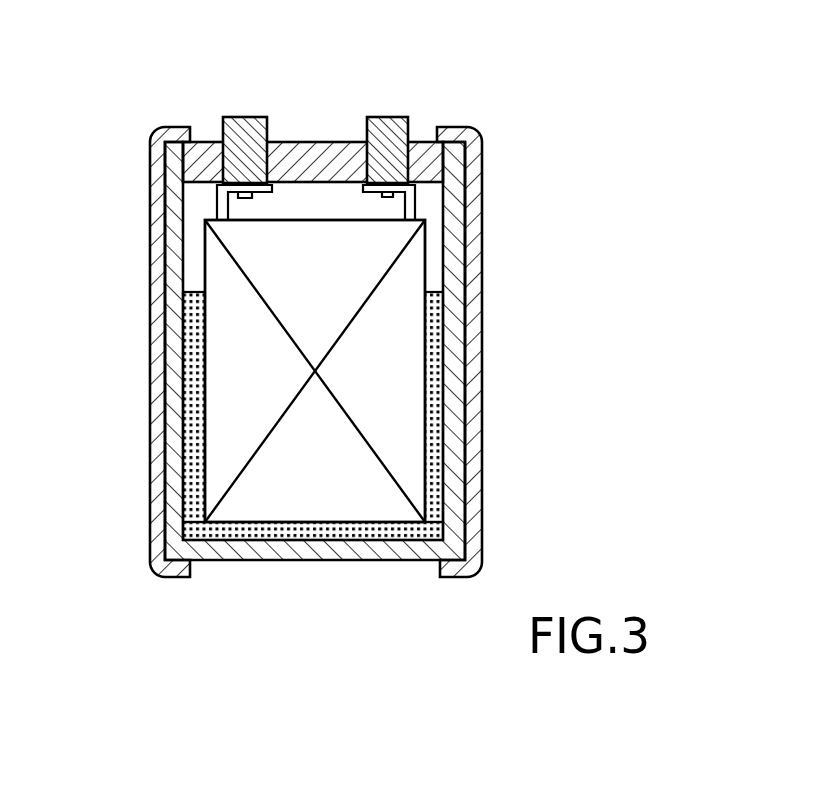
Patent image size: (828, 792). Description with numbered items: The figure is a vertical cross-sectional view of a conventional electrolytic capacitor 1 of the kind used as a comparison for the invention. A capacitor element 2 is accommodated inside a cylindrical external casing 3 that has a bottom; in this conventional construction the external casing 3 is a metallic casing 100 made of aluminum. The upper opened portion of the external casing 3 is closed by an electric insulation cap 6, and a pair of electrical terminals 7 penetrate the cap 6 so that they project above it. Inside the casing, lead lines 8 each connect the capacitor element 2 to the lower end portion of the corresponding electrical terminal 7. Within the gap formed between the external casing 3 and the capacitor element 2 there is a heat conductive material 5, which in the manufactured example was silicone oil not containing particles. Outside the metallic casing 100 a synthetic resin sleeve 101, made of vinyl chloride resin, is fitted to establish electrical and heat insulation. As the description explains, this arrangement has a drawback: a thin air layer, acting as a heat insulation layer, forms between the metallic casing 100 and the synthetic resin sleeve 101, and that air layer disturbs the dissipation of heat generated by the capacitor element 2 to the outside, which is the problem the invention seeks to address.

The electrolytic capacitor 1 is at (357, 339).
The capacitor element 2 is at (347, 478).
The external casing 3 is at (452, 502).
The heat conductive material 5 is at (443, 368).
The electric insulation cap 6 is at (330, 158).
The electrical terminal 7 is at (233, 118).
The lead line 8 is at (217, 203).
The metallic casing 100 is at (242, 548).
The synthetic resin sleeve 101 is at (473, 430).